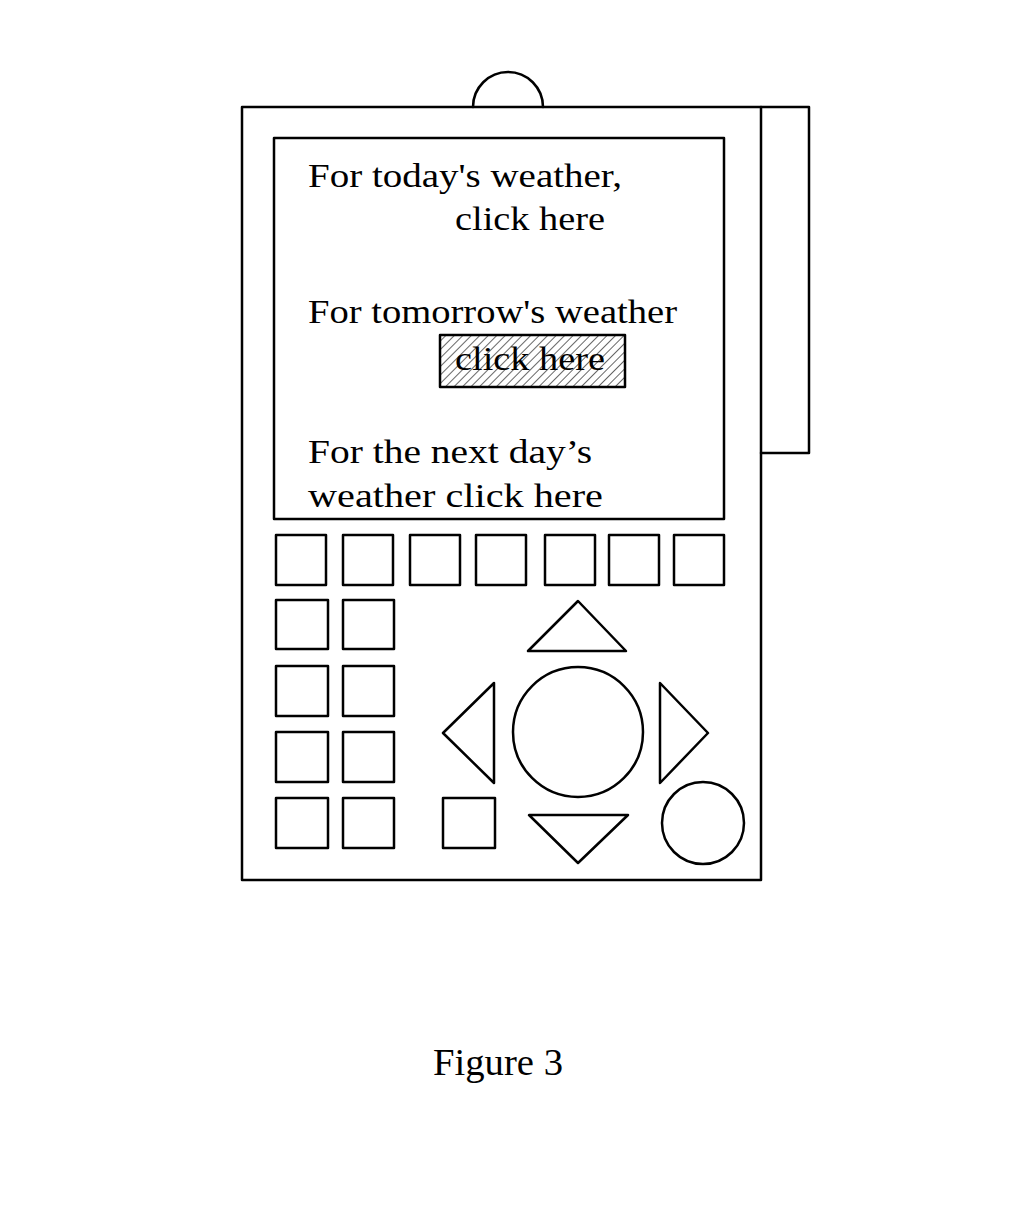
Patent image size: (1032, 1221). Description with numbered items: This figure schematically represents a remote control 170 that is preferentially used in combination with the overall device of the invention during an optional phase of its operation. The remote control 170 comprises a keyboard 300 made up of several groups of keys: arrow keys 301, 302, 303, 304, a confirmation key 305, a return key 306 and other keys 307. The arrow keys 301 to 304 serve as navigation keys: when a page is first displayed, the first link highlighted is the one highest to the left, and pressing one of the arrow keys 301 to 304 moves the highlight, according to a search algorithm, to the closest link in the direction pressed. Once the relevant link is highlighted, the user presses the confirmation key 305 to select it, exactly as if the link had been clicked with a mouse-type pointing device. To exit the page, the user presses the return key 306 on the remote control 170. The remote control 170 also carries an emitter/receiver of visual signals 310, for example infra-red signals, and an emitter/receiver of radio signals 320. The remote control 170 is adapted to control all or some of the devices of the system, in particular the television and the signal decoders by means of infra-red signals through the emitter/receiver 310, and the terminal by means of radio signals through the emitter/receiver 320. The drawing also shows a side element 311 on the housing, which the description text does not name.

The remote control 170 is at (157, 452).
The emitter/receiver of visual signals 310 is at (507, 90).
The side attachment 311 is at (792, 420).
The keyboard 300 is at (427, 617).
The arrow key 301 is at (577, 633).
The arrow key 302 is at (477, 733).
The arrow key 303 is at (675, 717).
The arrow key 304 is at (578, 832).
The confirmation key 305 is at (578, 765).
The return key 306 is at (462, 831).
The other keys 307 is at (293, 831).
The emitter/receiver of radio signals 320 is at (693, 815).